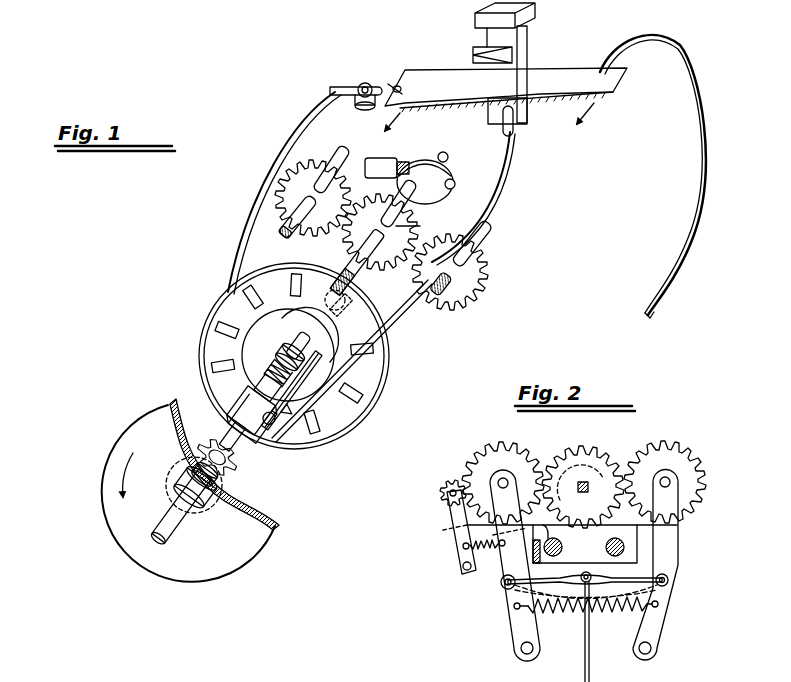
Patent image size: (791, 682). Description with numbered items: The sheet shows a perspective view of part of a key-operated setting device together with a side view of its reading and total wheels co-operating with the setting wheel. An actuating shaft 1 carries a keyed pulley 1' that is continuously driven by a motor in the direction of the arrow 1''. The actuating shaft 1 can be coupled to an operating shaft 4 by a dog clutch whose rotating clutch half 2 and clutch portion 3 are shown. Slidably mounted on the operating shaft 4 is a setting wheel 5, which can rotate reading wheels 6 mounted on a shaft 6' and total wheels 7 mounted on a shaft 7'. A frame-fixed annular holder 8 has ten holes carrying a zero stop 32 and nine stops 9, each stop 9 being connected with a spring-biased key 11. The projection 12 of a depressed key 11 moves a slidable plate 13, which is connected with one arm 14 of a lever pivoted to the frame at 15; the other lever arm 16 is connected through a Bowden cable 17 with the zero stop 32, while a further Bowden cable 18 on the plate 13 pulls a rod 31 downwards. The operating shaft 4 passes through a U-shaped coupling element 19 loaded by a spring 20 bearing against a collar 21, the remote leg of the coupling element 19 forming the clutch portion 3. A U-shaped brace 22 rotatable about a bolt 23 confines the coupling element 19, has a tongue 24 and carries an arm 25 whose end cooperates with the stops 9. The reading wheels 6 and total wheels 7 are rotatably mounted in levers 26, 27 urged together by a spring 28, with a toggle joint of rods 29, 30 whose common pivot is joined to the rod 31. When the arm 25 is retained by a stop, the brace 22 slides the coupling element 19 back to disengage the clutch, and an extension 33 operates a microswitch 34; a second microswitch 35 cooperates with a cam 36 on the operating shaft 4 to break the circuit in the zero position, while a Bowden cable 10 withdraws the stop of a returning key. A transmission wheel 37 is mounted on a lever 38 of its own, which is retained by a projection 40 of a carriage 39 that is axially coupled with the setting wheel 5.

In FIG. 1, the actuating shaft 1 is at (180, 541).
In FIG. 1, the pulley 1' is at (204, 490).
In FIG. 1, the arrow 1'' is at (104, 473).
In FIG. 1, the clutch half 2 is at (236, 476).
In FIG. 1, the clutch portion 3 is at (230, 441).
In FIG. 2, the operating shaft 4 is at (590, 484).
In FIG. 2, the setting wheel 5 is at (588, 462).
In FIG. 1, the reading wheels 6 is at (276, 199).
In FIG. 2, the reading wheels 6 is at (665, 469).
In FIG. 1, the shaft 6' is at (331, 156).
In FIG. 1, the total wheels 7 is at (465, 272).
In FIG. 2, the total wheels 7 is at (503, 467).
In FIG. 1, the shaft 7' is at (488, 243).
In FIG. 1, the annular holder 8 is at (357, 393).
In FIG. 1, the stops 9 is at (218, 317).
In FIG. 1, the Bowden cable 10 is at (500, 191).
In FIG. 1, the key 11 is at (475, 13).
In FIG. 1, the projection 12 is at (483, 53).
In FIG. 1, the plate 13 is at (555, 88).
In FIG. 1, the lever arm 14 is at (393, 86).
In FIG. 1, the pivot 15 is at (360, 84).
In FIG. 1, the lever arm 16 is at (335, 88).
In FIG. 1, the Bowden cable 17 is at (282, 155).
In FIG. 1, the Bowden cable 18 is at (700, 200).
In FIG. 1, the coupling element 19 is at (266, 382).
In FIG. 1, the spring 20 is at (276, 357).
In FIG. 1, the collar 21 is at (277, 346).
In FIG. 1, the brace 22 is at (247, 401).
In FIG. 1, the bolt 23 is at (290, 424).
In FIG. 1, the tongue 24 is at (262, 388).
In FIG. 1, the arm 25 is at (275, 420).
In FIG. 2, the lever 26 is at (667, 552).
In FIG. 2, the lever 27 is at (503, 567).
In FIG. 2, the spring 28 is at (540, 612).
In FIG. 2, the rod 29 is at (658, 585).
In FIG. 2, the rod 30 is at (520, 590).
In FIG. 2, the rod 31 is at (584, 675).
In FIG. 1, the zero stop 32 is at (270, 365).
In FIG. 1, the extension 33 is at (341, 360).
In FIG. 1, the microswitch 34 is at (385, 330).
In FIG. 1, the microswitch 35 is at (382, 159).
In FIG. 1, the cam 36 is at (433, 166).
In FIG. 2, the transmission wheel 37 is at (451, 483).
In FIG. 2, the lever 38 is at (465, 558).
In FIG. 2, the carriage 39 is at (677, 525).
In FIG. 2, the projection 40 is at (476, 530).